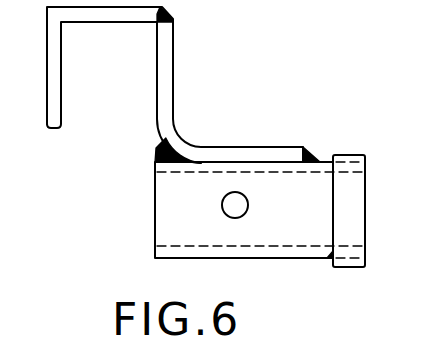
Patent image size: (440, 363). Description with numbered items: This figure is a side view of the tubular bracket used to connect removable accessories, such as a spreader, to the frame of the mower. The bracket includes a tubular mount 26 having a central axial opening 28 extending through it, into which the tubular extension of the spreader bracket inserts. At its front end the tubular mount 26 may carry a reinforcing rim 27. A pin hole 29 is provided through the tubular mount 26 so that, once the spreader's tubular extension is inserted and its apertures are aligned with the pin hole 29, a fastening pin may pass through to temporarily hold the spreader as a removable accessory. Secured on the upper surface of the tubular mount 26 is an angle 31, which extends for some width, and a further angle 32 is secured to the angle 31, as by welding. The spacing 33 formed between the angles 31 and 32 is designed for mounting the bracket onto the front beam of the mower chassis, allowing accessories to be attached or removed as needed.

The tubular mount 26 is at (175, 219).
The reinforcing rim 27 is at (357, 155).
The central axial opening 28 is at (297, 241).
The pin hole 29 is at (249, 205).
The angle 31 is at (174, 74).
The further angle 32 is at (113, 15).
The spacing 33 is at (116, 88).